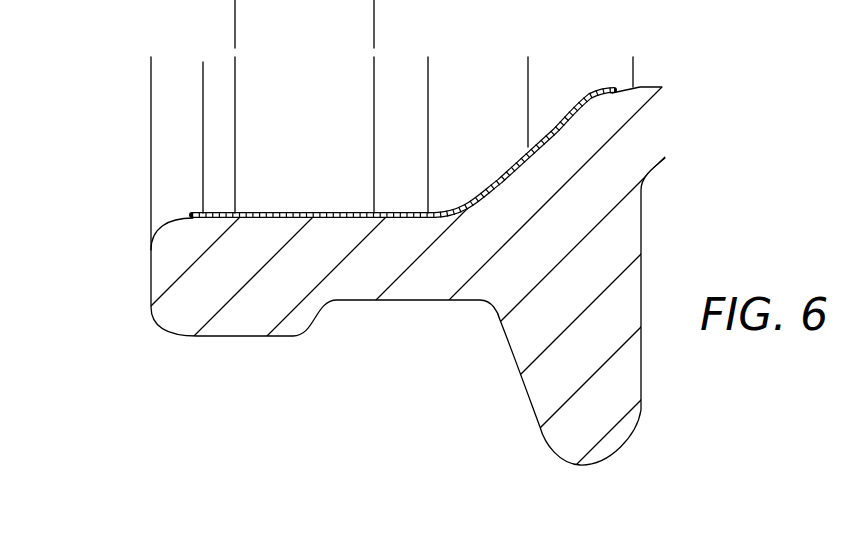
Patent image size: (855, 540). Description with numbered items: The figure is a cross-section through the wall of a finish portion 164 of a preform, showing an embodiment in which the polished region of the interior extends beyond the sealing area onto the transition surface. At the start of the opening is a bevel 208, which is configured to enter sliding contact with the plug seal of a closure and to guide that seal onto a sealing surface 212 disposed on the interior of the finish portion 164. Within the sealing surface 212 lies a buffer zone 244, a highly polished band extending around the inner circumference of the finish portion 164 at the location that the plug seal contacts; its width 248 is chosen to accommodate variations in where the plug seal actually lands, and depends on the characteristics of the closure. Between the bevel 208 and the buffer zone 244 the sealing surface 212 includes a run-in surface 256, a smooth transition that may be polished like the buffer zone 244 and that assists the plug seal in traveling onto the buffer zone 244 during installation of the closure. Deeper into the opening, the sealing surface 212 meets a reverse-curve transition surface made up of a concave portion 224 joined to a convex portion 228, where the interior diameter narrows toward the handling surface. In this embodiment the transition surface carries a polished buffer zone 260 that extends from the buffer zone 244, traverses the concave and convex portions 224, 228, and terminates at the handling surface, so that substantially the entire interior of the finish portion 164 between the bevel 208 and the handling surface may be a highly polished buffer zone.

The finish portion 164 is at (258, 366).
The bevel 208 is at (162, 112).
The sealing surface 212 is at (217, 83).
The concave portion 224 is at (478, 100).
The convex portion 228 is at (576, 88).
The buffer zone 244 is at (318, 138).
The width 248 is at (360, 25).
The run-in surface 256 is at (188, 217).
The polished buffer zone 260 is at (557, 113).